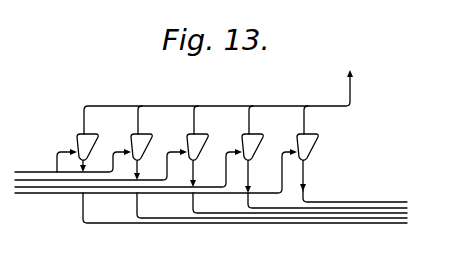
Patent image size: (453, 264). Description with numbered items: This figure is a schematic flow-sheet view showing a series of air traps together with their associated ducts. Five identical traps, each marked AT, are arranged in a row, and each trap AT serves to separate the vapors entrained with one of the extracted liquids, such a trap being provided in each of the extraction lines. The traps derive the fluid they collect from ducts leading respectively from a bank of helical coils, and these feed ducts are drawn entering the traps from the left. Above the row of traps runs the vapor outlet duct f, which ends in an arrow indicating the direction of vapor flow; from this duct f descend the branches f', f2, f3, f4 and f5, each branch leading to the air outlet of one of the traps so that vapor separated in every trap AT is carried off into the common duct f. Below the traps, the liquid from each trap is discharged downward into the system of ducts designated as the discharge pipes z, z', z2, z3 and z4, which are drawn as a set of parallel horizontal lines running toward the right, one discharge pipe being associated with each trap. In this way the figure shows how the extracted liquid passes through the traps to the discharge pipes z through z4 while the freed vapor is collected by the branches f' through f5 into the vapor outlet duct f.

The vapor outlet duct f is at (237, 102).
The branch of vapor outlet duct f' is at (73, 132).
The branch of vapor outlet duct f2 is at (140, 117).
The branch of vapor outlet duct f3 is at (194, 107).
The branch of vapor outlet duct f4 is at (251, 119).
The branch of vapor outlet duct f5 is at (304, 108).
The air trap AT is at (131, 138).
The discharge pipe z is at (245, 222).
The discharge pipe z' is at (272, 222).
The discharge pipe z2 is at (279, 214).
The discharge pipe z3 is at (336, 207).
The discharge pipe z4 is at (390, 201).